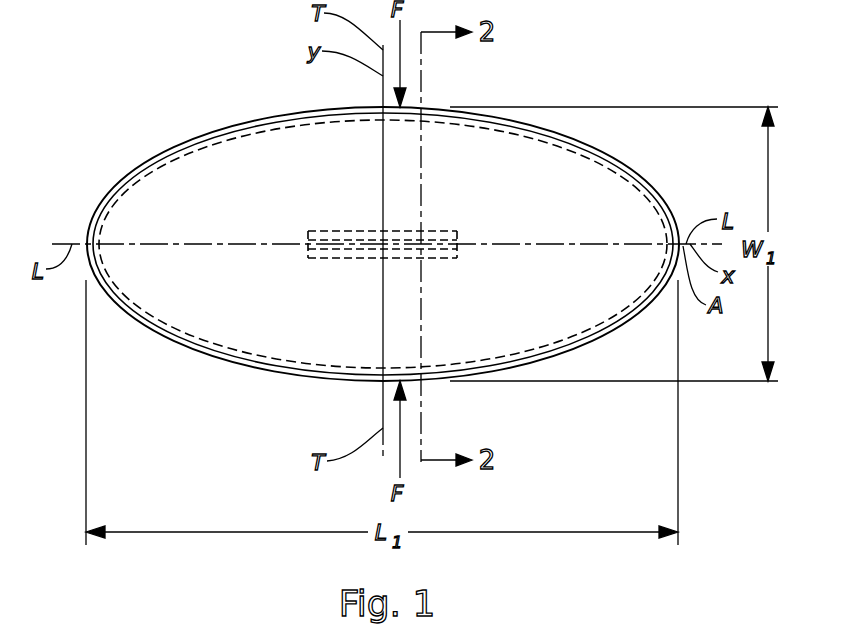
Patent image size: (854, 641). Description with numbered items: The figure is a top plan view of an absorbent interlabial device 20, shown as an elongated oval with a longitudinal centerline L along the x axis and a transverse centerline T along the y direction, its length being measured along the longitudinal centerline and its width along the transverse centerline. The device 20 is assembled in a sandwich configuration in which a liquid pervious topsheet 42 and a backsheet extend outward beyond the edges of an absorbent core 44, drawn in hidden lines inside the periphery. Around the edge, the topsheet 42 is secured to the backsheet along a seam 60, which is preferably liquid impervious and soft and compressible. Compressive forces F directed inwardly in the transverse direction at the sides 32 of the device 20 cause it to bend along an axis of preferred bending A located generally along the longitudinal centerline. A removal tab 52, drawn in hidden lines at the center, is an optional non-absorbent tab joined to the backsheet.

The absorbent interlabial device 20 is at (377, 250).
The sides 32 is at (383, 107).
The liquid pervious topsheet 42 is at (563, 168).
The absorbent core 44 is at (226, 349).
The removal tab 52 is at (448, 232).
The seam 60 is at (650, 191).